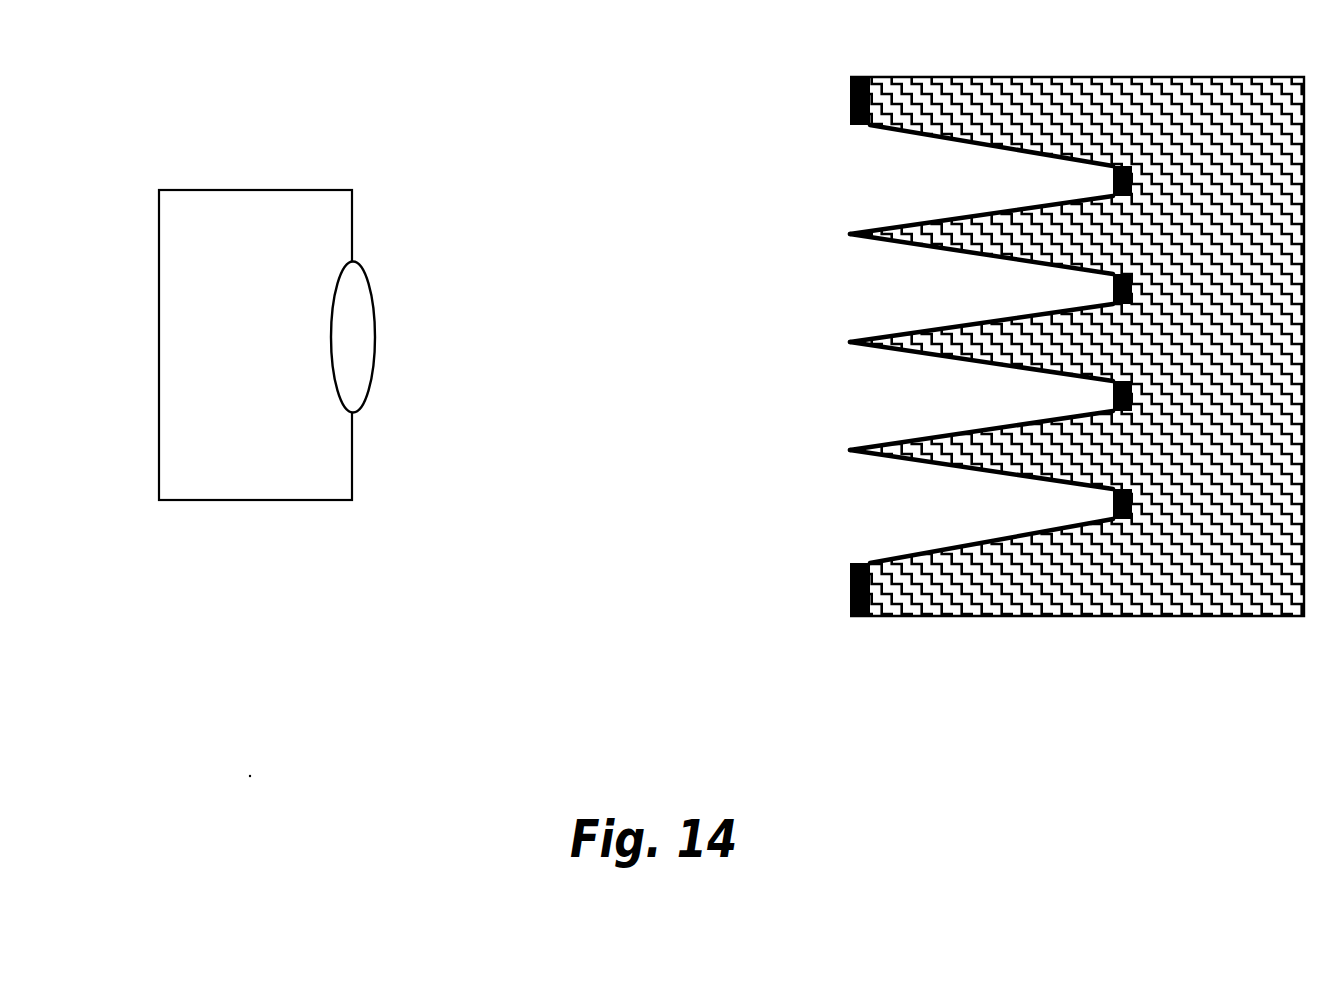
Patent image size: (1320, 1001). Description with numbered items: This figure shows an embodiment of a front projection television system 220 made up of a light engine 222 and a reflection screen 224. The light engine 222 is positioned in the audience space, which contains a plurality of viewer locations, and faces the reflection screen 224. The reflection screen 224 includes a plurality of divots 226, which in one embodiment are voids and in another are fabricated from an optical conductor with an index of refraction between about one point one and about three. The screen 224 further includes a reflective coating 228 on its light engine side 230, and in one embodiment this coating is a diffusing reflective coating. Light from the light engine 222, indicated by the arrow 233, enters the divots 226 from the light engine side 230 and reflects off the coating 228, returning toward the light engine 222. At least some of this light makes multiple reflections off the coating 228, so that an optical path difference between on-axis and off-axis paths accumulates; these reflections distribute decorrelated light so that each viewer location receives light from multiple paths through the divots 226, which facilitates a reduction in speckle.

The front projection television system 220 is at (492, 742).
The light engine 222 is at (258, 500).
The reflection screen 224 is at (1038, 617).
The divots 226 is at (922, 198).
The reflective coating 228 is at (860, 618).
The light engine side 230 is at (788, 354).
The projected light 233 is at (418, 216).